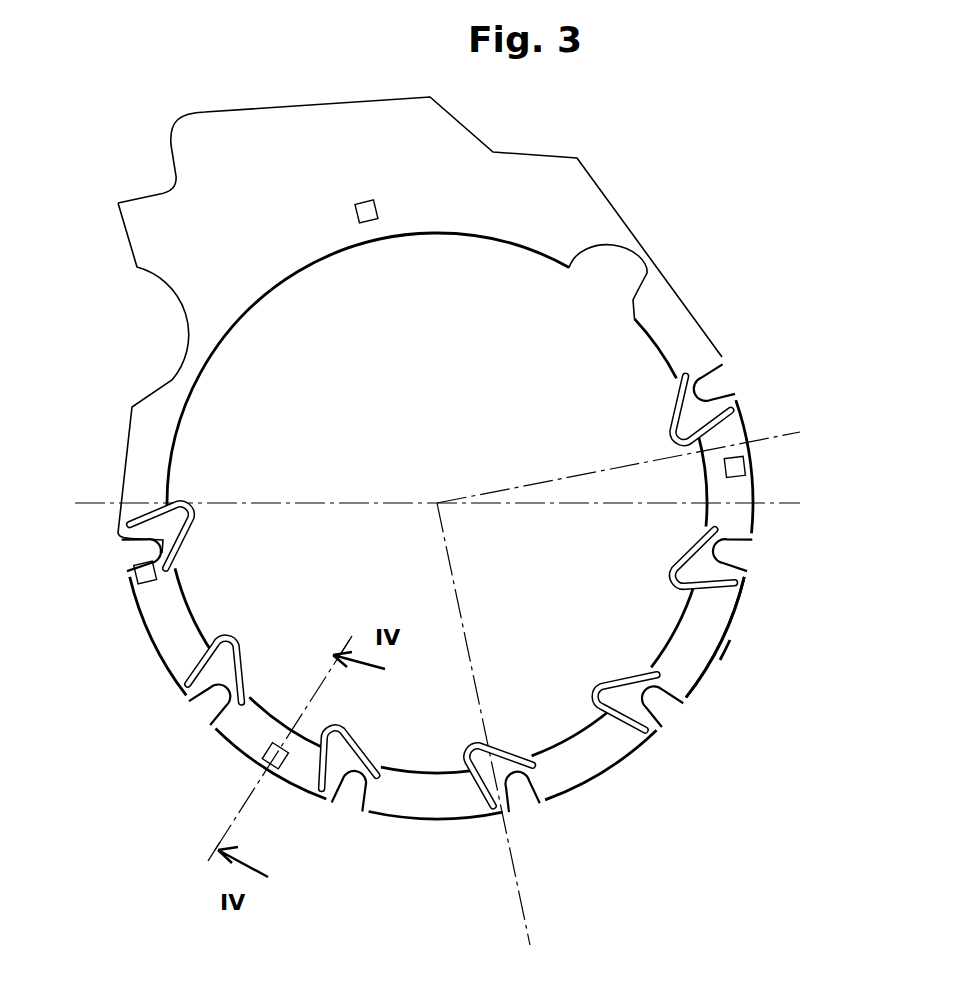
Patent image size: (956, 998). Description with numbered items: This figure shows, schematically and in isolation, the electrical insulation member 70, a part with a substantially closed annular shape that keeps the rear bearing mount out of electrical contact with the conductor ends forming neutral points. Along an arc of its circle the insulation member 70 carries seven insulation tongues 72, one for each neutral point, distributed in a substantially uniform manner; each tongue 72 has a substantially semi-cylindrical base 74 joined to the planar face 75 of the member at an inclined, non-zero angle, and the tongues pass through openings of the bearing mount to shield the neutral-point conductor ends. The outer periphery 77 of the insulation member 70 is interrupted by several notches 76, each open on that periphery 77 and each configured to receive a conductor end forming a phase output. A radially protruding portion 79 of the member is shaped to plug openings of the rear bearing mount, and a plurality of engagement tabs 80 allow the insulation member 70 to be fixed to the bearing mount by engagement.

The electrical insulation member 70 is at (611, 202).
The insulation tongue 72 is at (687, 585).
The semi-cylindrical base 74 is at (745, 418).
The planar face 75 is at (723, 613).
The notch 76 is at (665, 700).
The outer periphery 77 is at (720, 643).
The radially protruding portion 79 is at (260, 164).
The engagement tab 80 is at (746, 464).